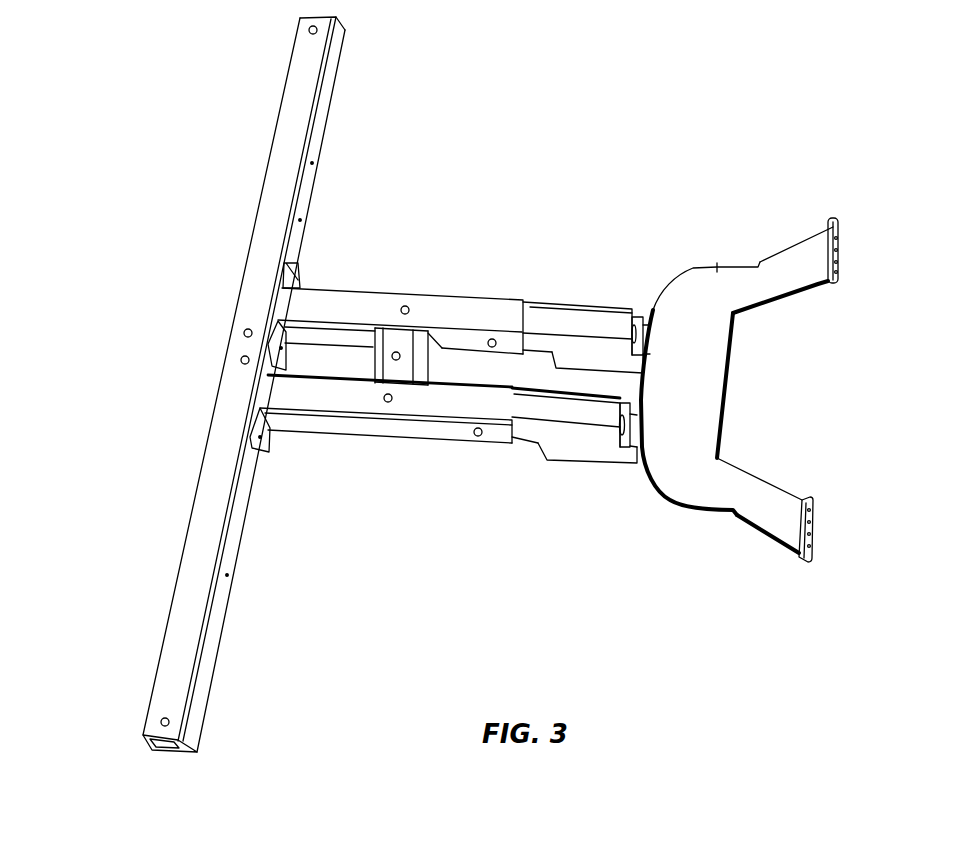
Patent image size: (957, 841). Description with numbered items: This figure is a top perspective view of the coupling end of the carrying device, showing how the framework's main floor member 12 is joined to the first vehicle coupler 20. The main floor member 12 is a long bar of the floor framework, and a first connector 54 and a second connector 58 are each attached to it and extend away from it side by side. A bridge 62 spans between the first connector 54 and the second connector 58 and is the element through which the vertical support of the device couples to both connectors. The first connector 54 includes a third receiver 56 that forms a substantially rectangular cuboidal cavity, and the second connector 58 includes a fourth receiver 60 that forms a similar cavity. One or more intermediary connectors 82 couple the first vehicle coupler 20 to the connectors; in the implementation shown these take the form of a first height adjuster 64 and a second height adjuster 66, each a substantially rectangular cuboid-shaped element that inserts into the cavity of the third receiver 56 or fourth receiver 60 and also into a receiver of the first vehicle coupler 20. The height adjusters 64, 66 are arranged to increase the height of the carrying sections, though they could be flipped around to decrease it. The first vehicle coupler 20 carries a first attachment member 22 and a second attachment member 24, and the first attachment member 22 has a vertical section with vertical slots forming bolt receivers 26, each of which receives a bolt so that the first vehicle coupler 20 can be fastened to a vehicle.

The main floor member 12 is at (330, 88).
The first vehicle coupler 20 is at (717, 272).
The first attachment member 22 is at (800, 243).
The second attachment member 24 is at (775, 537).
The bolt receivers 26 is at (838, 232).
The first connector 54 is at (393, 291).
The third receiver 56 is at (526, 305).
The second connector 58 is at (358, 436).
The fourth receiver 60 is at (523, 438).
The bridge 62 is at (441, 350).
The first height adjuster 64 is at (614, 305).
The second height adjuster 66 is at (603, 463).
The intermediary connectors 82 is at (578, 303).